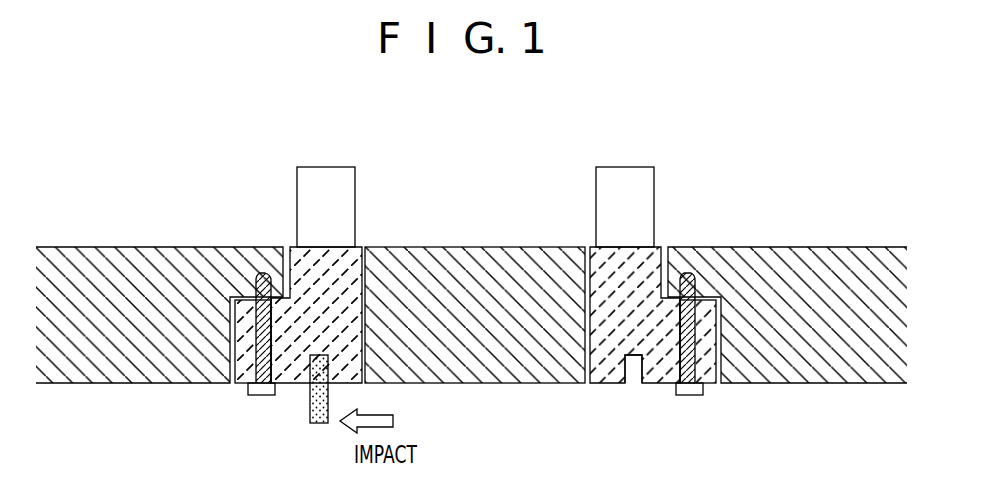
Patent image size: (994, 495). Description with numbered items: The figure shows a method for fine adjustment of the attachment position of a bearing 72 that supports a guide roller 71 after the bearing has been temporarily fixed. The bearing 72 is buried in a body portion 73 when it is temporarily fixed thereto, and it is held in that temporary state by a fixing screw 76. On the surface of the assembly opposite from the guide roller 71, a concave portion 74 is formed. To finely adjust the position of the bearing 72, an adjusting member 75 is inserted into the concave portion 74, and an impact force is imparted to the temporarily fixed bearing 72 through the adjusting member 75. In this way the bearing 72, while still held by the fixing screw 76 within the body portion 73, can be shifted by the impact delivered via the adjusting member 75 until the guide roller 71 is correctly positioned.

The guide roller 71 is at (348, 202).
The bearing 72 is at (298, 253).
The body portion 73 is at (138, 363).
The concave portion 74 is at (646, 368).
The adjusting member 75 is at (308, 405).
The fixing screw 76 is at (255, 370).